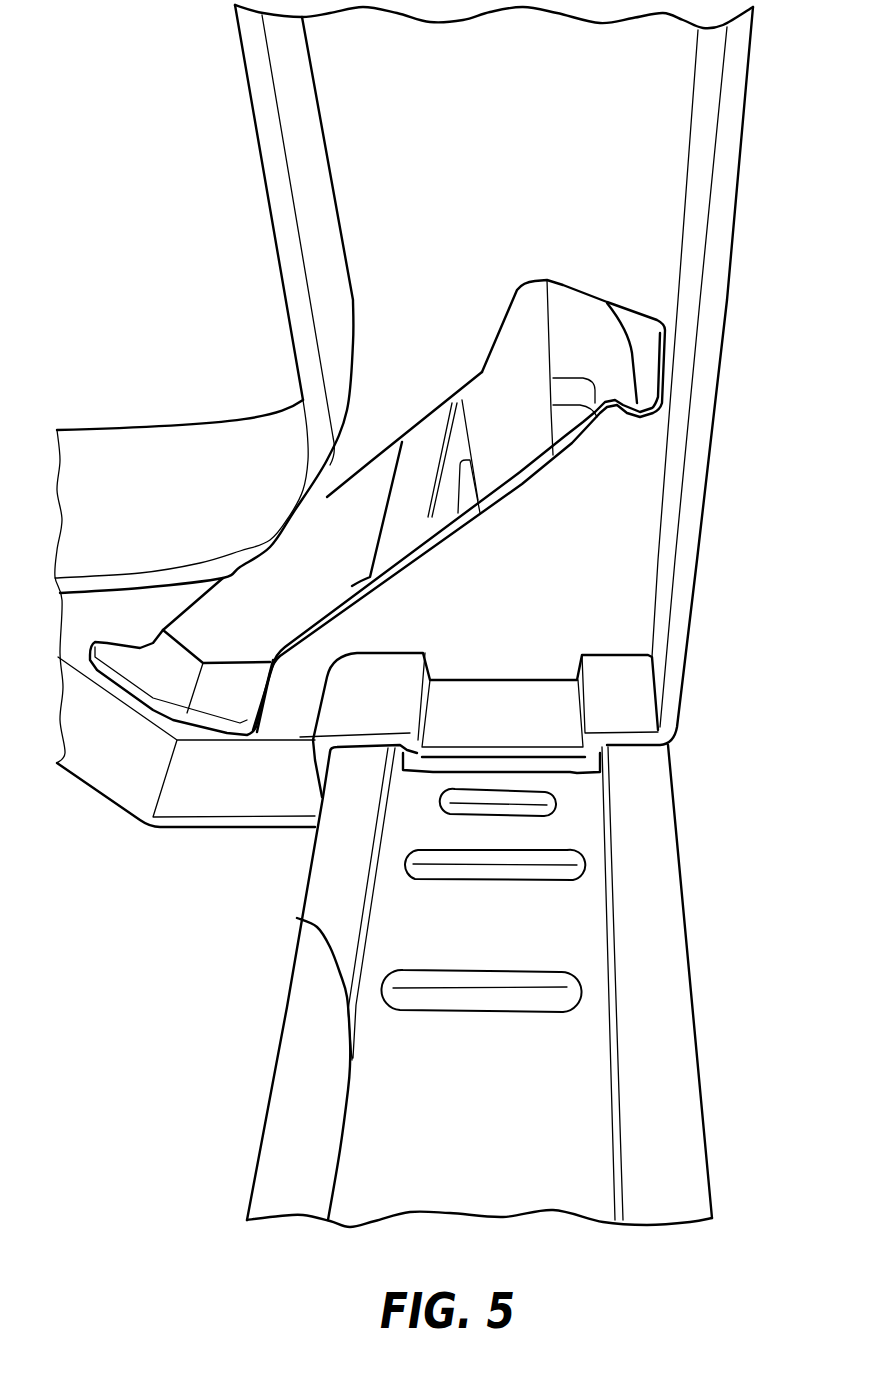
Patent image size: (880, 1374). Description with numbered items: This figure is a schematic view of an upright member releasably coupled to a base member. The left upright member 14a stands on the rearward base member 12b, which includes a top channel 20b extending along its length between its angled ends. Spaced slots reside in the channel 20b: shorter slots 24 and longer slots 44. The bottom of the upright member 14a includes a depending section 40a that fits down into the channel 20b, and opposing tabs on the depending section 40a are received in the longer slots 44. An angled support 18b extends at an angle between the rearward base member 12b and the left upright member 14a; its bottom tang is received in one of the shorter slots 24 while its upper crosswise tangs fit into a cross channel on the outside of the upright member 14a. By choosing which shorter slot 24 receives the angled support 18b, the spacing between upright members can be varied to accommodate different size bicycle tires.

The left upright member 14a is at (363, 188).
The angled support 18b is at (528, 445).
The depending section 40a is at (518, 726).
The shorter slot 24 is at (533, 813).
The longer slot 44 is at (540, 870).
The rearward base member 12b is at (328, 912).
The top channel 20b is at (482, 1141).